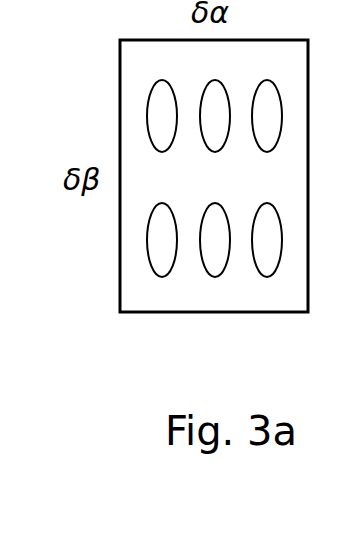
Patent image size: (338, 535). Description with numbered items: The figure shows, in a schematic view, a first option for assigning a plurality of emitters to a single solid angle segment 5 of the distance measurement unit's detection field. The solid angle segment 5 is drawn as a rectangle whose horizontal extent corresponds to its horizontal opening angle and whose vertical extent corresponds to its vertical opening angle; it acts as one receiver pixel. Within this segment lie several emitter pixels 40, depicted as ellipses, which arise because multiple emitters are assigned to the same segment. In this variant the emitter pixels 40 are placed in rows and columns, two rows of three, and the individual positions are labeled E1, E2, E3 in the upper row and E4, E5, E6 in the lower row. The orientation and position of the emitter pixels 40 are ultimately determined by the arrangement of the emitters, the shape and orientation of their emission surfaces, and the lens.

The solid angle segment 5 is at (135, 98).
The emitter pixels 40 is at (213, 217).
The detector element E1 is at (155, 99).
The detector element E2 is at (215, 99).
The detector element E3 is at (273, 99).
The detector element E4 is at (154, 252).
The detector element E5 is at (216, 252).
The detector element E6 is at (273, 252).